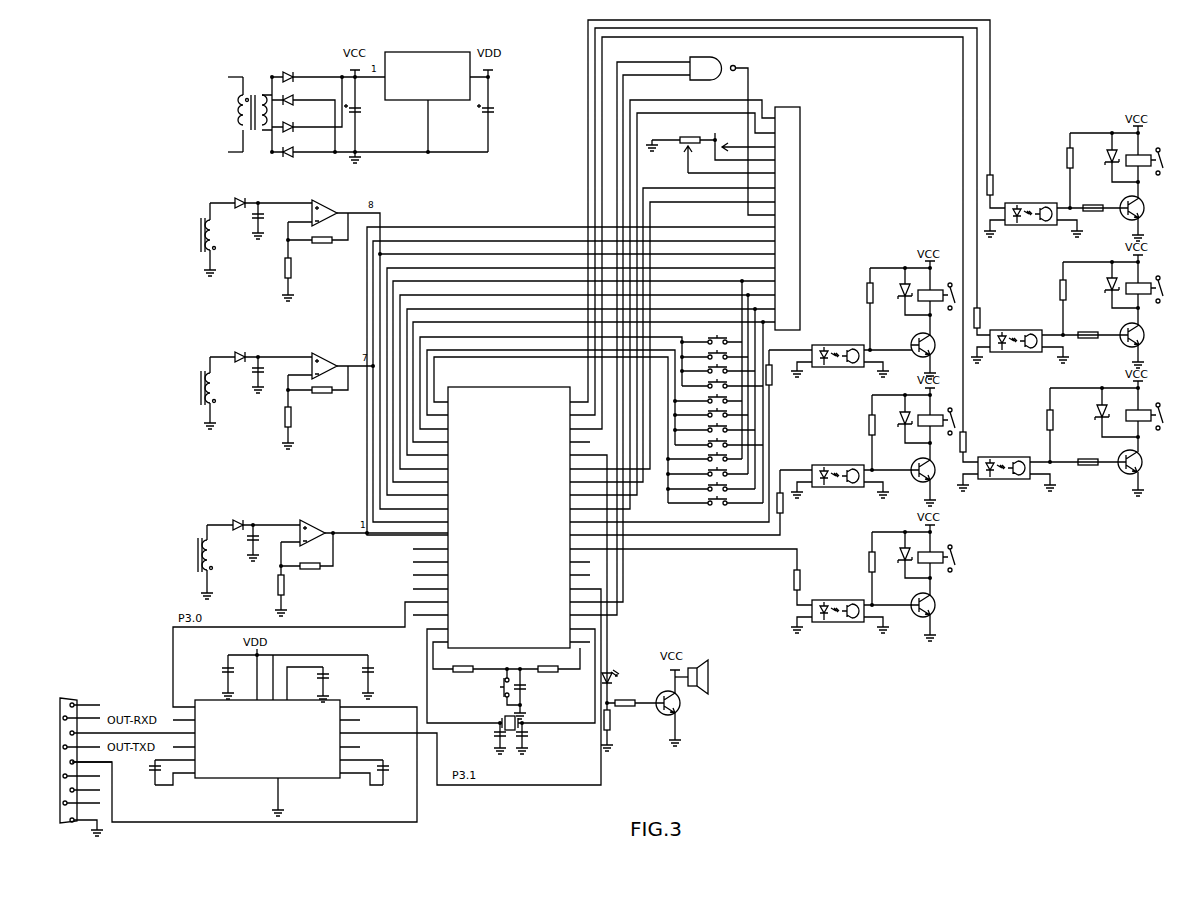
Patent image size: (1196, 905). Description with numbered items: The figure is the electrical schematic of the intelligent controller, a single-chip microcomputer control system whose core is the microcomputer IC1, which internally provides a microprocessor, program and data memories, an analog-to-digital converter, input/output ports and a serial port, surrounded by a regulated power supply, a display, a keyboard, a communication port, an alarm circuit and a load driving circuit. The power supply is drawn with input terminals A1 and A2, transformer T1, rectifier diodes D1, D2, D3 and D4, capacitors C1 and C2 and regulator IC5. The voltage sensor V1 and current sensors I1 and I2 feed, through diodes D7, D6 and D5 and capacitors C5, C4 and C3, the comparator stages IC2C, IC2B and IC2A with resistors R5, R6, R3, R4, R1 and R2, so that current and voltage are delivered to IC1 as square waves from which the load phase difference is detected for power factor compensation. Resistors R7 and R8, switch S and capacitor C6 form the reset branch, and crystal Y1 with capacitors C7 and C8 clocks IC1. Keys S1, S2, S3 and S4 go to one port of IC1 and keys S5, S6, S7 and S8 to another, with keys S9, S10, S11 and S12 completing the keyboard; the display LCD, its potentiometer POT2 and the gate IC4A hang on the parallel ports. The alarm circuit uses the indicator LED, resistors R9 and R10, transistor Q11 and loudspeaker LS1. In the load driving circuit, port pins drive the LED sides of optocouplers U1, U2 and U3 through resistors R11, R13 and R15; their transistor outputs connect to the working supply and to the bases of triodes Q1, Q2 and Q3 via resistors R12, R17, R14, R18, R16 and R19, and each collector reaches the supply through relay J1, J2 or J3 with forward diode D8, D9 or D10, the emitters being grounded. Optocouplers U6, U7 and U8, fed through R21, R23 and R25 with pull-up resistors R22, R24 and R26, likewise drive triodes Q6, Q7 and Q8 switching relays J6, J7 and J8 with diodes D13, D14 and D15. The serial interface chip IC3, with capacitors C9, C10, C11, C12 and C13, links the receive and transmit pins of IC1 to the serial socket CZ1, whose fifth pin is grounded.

The AC input terminal A1 is at (227, 77).
The AC input terminal A2 is at (227, 152).
The transformer T1 is at (254, 106).
The rectifier diode D1 is at (328, 73).
The rectifier diode D2 is at (303, 119).
The rectifier diode D3 is at (307, 104).
The rectifier diode D4 is at (380, 148).
The filter capacitor C1 is at (360, 114).
The filter capacitor C2 is at (493, 114).
The voltage regulator IC5 is at (436, 94).
The voltage sensor V1 is at (203, 239).
The current sensor I1 is at (204, 393).
The current sensing coil I2 is at (201, 562).
The diode D5 is at (253, 519).
The diode D6 is at (261, 351).
The seventh diode D7 is at (261, 197).
The capacitor C3 is at (261, 543).
The capacitor C4 is at (266, 375).
The capacitor C5 is at (266, 221).
The operational amplifier IC2A is at (316, 534).
The operational amplifier IC2B is at (317, 358).
The operational amplifier IC2C is at (316, 205).
The resistor R1 is at (310, 573).
The resistor R2 is at (274, 595).
The resistor R3 is at (322, 397).
The resistor R4 is at (295, 428).
The resistor R5 is at (322, 247).
The resistor R6 is at (295, 279).
The single-chip microcomputer IC1 is at (509, 517).
The resistor R7 is at (463, 676).
The resistor R8 is at (548, 676).
The reset switch S is at (505, 687).
The capacitor C6 is at (528, 694).
The crystal oscillator Y1 is at (509, 716).
The capacitor C7 is at (492, 738).
The eighth capacitor C8 is at (530, 738).
The light emitting diode LED is at (622, 673).
The seventh resistor R9 is at (631, 697).
The tenth resistor R10 is at (618, 727).
The transistor Q11 is at (681, 711).
The loudspeaker LS1 is at (703, 677).
The NAND gate MC74HC00A IC4A is at (717, 127).
The liquid crystal display LCM1602 LCD is at (797, 218).
The potentiometer POT2 is at (710, 147).
The key S1 is at (712, 338).
The key S2 is at (715, 353).
The key S3 is at (718, 367).
The key S4 is at (722, 382).
The key S5 is at (708, 397).
The key S6 is at (711, 411).
The key S7 is at (715, 426).
The key S8 is at (719, 441).
The key switch S9 is at (705, 455).
The key switch S10 is at (708, 470).
The key switch S11 is at (711, 485).
The key switch S12 is at (715, 499).
The resistor R21 is at (789, 367).
The resistor R23 is at (794, 491).
The resistor R25 is at (809, 587).
The optocoupler U6 is at (851, 354).
The resistor R22 is at (887, 309).
The zener diode D13 is at (904, 291).
The relay J6 is at (936, 291).
The transistor Q6 is at (933, 347).
The optocoupler U7 is at (851, 474).
The resistor R24 is at (888, 432).
The zener diode D14 is at (904, 419).
The relay J7 is at (936, 419).
The transistor Q7 is at (933, 474).
The optocoupler U8 is at (851, 609).
The resistor R26 is at (888, 568).
The zener diode D15 is at (904, 555).
The relay J8 is at (936, 555).
The transistor Q8 is at (933, 609).
The eleventh resistor R11 is at (1002, 190).
The first optocoupler U1 is at (1052, 212).
The twelfth resistor R12 is at (1091, 170).
The seventeenth resistor R17 is at (1091, 201).
The eighth diode D8 is at (1113, 157).
The first relay J1 is at (1144, 157).
The first triode Q1 is at (1142, 211).
The thirteenth resistor R13 is at (989, 319).
The second optocoupler U2 is at (1045, 339).
The fourteenth resistor R14 is at (1088, 298).
The resistor R18 is at (1086, 328).
The ninth diode D9 is at (1113, 285).
The second relay J2 is at (1144, 285).
The second triode Q2 is at (1142, 338).
The fifteenth resistor R15 is at (975, 445).
The third optocoupler U3 is at (1037, 466).
The sixteenth resistor R16 is at (1081, 425).
The resistor R19 is at (1086, 455).
The zener diode D10 is at (1105, 412).
The third relay J3 is at (1144, 412).
The third triode Q3 is at (1141, 466).
The RS232 serial interface chip IC3 is at (244, 738).
The ninth capacitor C9 is at (392, 774).
The tenth capacitor C10 is at (334, 682).
The eleventh capacitor C11 is at (379, 677).
The capacitor C12 is at (225, 677).
The capacitor C13 is at (143, 774).
The serial interface socket CZ1 is at (119, 759).